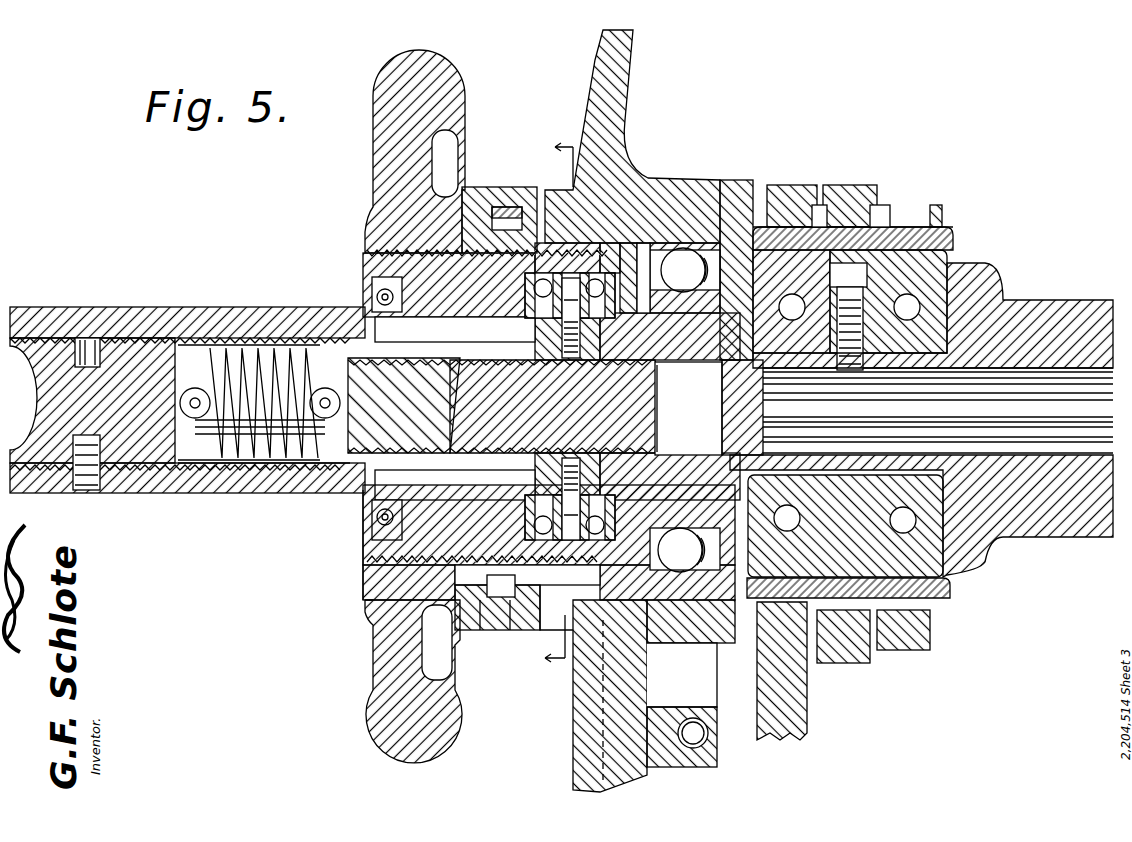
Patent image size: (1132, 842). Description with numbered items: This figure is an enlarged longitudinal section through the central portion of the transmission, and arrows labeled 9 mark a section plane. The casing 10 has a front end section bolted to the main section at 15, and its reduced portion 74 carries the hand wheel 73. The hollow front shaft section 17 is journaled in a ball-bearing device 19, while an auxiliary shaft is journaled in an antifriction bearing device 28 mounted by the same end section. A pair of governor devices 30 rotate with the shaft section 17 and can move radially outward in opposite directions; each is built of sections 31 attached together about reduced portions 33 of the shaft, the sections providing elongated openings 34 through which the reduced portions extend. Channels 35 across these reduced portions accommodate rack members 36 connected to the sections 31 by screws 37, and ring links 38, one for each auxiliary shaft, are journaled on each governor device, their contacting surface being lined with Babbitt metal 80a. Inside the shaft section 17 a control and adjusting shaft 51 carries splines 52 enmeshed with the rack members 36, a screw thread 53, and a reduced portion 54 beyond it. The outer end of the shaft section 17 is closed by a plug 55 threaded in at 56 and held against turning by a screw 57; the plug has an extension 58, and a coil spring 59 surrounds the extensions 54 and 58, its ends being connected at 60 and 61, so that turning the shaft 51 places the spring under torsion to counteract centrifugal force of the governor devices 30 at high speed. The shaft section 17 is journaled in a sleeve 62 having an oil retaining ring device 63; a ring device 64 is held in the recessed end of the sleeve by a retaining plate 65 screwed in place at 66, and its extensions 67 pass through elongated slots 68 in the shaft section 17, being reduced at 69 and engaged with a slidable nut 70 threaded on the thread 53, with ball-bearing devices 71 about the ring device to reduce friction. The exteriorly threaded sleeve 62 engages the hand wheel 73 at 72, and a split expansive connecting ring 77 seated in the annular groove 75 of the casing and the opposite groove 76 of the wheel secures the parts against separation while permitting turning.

The section line 9- 9 is at (548, 402).
The casing 10 is at (627, 68).
The bolt 15 is at (549, 95).
The front shaft section 17 is at (222, 312).
The ball-bearing device 19 is at (732, 182).
The antifriction bearing device 28 is at (725, 752).
The governor device 30 is at (910, 330).
The section 31 is at (943, 580).
The reduced portion 33 is at (963, 273).
The elongated opening 34 is at (890, 240).
The channel 35 is at (925, 350).
The rack member 36 is at (947, 230).
The screw 37 is at (847, 263).
The ring link 38 is at (835, 182).
The control and adjusting shaft 51 is at (688, 408).
The splines 52 is at (1043, 397).
The screw thread 53 is at (370, 453).
The reduced portion 54 is at (283, 467).
The plug 55 is at (158, 333).
The screw thread 56 is at (110, 305).
The screw 57 is at (100, 490).
The extension 58 is at (193, 427).
The coil spring 59 is at (273, 370).
The spring end connection 60 is at (327, 393).
The spring end connection 61 is at (197, 393).
The sleeve 62 is at (358, 550).
The oil retaining ring device 63 is at (358, 530).
The ring device 64 is at (596, 280).
The retaining plate 65 is at (645, 262).
The screw 66 is at (645, 182).
The extension 67 is at (535, 333).
The elongated slot 68 is at (365, 264).
The reduced end 69 is at (663, 390).
The slidable nut 70 is at (663, 428).
The ball-bearing device 71 is at (535, 205).
The screw threaded engagement 72 is at (362, 603).
The hand wheel 73 is at (362, 710).
The reduced portion 74 is at (468, 620).
The annular groove 75 is at (567, 637).
The annular groove 76 is at (507, 613).
The split expansive connecting ring 77 is at (493, 613).
The Babbitt metal lining 80a is at (890, 227).